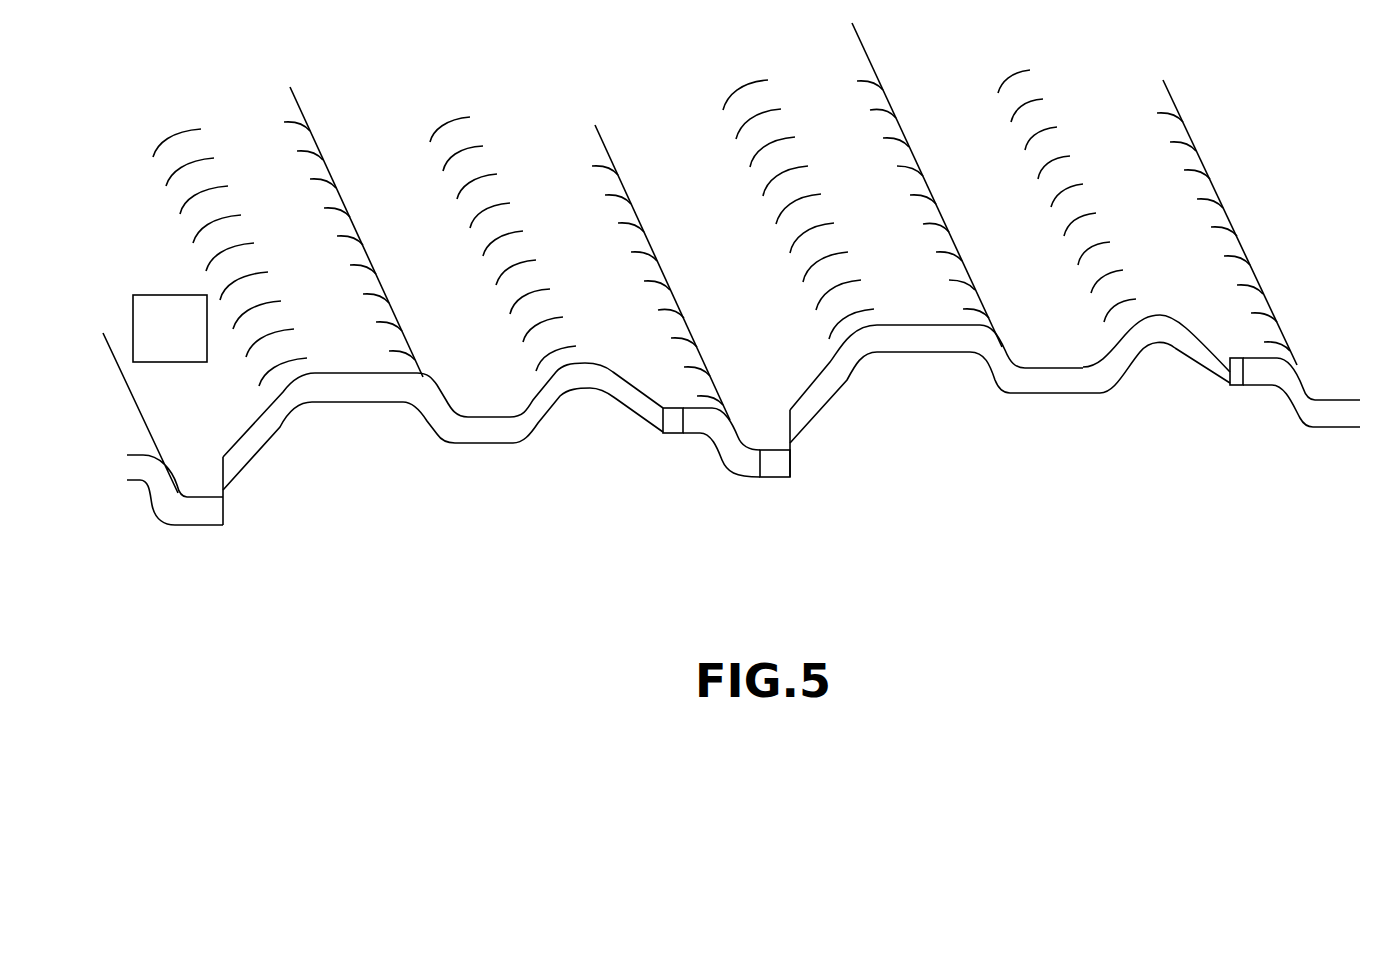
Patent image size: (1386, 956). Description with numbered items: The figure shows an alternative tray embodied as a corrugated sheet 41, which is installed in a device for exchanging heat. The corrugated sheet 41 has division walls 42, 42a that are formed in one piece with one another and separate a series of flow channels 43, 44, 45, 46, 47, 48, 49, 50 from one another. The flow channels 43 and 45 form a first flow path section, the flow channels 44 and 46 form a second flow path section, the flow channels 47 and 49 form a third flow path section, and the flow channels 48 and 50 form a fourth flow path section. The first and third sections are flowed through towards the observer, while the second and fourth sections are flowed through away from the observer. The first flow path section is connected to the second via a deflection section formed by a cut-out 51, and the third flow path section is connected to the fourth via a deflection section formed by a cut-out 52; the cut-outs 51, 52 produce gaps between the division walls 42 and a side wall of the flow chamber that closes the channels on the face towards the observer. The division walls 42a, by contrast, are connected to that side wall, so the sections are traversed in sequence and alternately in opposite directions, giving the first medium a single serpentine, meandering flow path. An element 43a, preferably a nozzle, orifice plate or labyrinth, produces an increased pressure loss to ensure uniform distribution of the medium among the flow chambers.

The corrugated sheet 41 is at (731, 462).
The division walls 42 is at (285, 408).
The division walls 42a is at (727, 450).
The flow channel 43 is at (222, 423).
The element 43a is at (150, 296).
The flow channel 44 is at (347, 412).
The flow channel 45 is at (490, 393).
The flow channel 46 is at (683, 447).
The flow channel 47 is at (763, 437).
The flow channel 48 is at (920, 375).
The flow channel 49 is at (1055, 350).
The flow channel 50 is at (1253, 410).
The cut-out 51 is at (223, 513).
The cut-out 52 is at (790, 460).